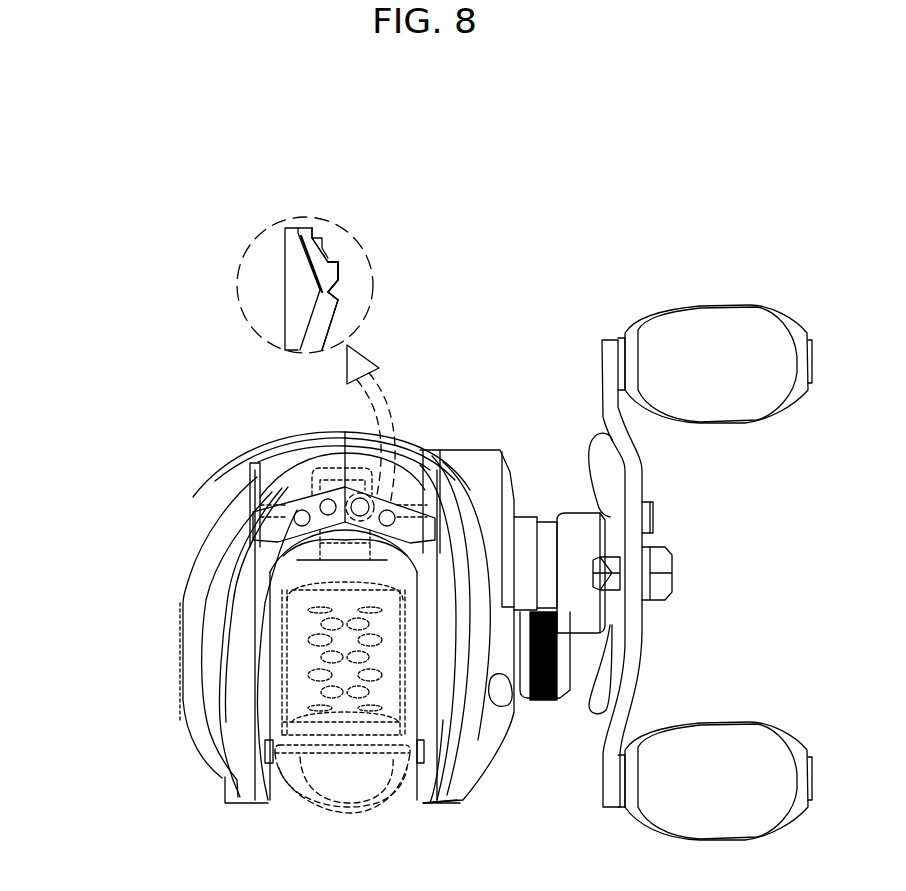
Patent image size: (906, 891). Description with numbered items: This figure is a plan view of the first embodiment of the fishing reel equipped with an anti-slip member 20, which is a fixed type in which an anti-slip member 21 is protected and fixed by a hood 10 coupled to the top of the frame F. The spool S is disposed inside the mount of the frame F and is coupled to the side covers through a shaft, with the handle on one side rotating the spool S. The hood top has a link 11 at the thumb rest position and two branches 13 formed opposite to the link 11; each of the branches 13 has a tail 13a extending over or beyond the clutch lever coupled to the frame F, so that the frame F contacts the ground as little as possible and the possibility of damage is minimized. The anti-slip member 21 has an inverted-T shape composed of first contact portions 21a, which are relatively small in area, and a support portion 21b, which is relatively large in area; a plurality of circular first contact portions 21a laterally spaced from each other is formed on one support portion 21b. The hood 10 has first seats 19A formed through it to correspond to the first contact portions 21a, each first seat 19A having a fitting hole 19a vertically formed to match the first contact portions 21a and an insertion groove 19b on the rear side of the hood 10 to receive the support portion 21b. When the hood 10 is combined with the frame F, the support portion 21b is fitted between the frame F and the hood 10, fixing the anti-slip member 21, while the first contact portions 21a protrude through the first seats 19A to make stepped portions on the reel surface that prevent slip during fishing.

The hood 10 is at (282, 322).
The link 11 is at (243, 472).
The branches 13 is at (243, 642).
The tail 13a is at (247, 777).
The first seats 19A is at (445, 262).
The fitting hole 19a is at (340, 282).
The insertion groove 19b is at (333, 293).
The anti-slip member 20 is at (325, 289).
The anti-slip member 21 is at (283, 165).
The first contact portions 21a is at (332, 257).
The support portion 21b is at (298, 233).
The frame F is at (287, 287).
The spool S is at (323, 710).